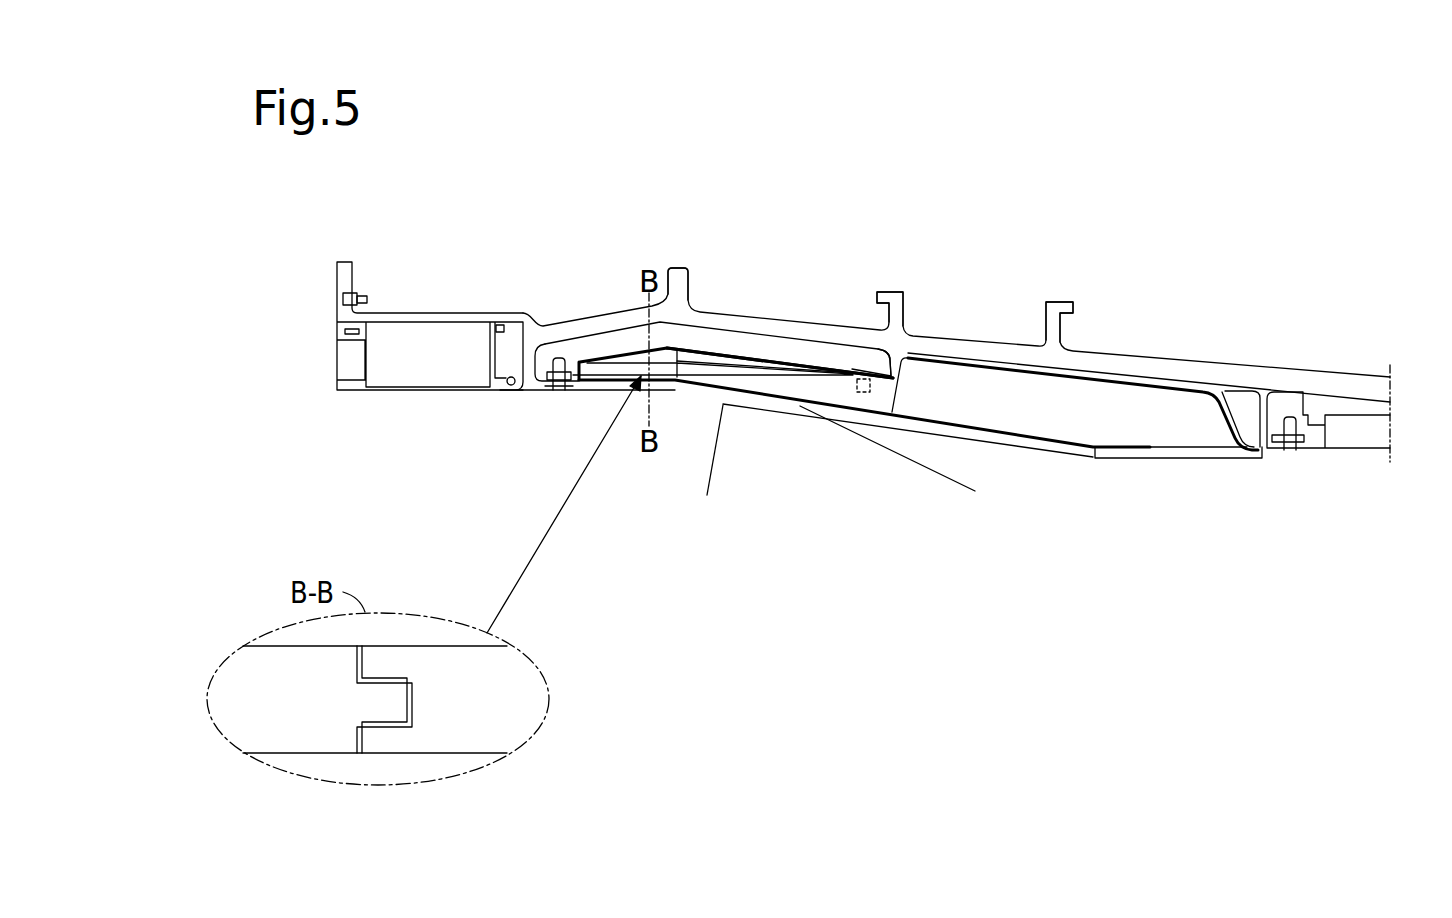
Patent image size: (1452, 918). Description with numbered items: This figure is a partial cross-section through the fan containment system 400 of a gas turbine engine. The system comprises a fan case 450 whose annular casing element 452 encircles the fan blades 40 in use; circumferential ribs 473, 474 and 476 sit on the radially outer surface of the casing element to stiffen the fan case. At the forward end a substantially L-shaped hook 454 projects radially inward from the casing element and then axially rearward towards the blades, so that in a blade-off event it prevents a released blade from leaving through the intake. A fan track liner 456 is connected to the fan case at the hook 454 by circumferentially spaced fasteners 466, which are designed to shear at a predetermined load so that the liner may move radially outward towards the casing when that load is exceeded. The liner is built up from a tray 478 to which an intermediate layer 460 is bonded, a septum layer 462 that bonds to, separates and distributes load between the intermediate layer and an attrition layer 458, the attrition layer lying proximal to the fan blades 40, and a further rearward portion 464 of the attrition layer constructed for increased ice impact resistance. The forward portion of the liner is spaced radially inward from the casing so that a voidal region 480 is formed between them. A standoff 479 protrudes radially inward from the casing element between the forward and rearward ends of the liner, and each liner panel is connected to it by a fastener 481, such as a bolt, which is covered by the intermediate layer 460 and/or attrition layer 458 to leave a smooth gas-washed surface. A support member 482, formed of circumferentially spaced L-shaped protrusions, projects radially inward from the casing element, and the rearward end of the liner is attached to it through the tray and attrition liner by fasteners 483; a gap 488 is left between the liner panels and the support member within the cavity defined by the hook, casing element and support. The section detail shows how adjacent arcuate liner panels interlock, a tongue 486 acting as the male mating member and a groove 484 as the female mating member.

The fan blades 40 is at (710, 457).
The fan containment system 400 is at (1182, 289).
The fan case 450 is at (602, 285).
The annular casing element 452 is at (760, 320).
The hook 454 is at (525, 391).
The fan track liner 456 is at (1064, 466).
The attrition layer 458 is at (1027, 443).
The intermediate layer 460 is at (976, 406).
The septum layer 462 is at (993, 426).
The rearward portion 464 is at (1165, 455).
The fasteners 466 is at (557, 391).
The circumferential rib 473 is at (681, 290).
The circumferential rib 474 is at (887, 292).
The circumferential rib 476 is at (1057, 307).
The tray 478 is at (800, 360).
The standoff 479 is at (887, 360).
The voidal region 480 is at (588, 348).
The fastener 481 is at (857, 390).
The support member 482 is at (1263, 418).
The fasteners 483 is at (1290, 455).
The groove 484 is at (413, 703).
The tongue 486 is at (392, 705).
The gap 488 is at (1243, 400).